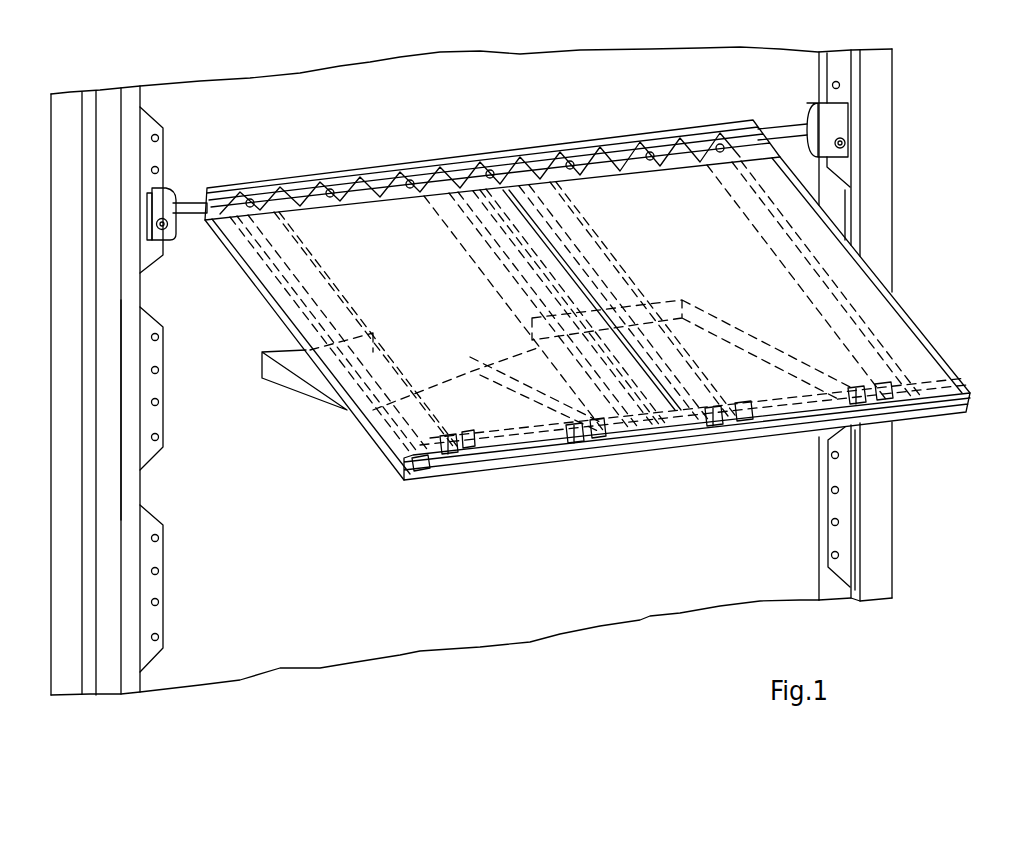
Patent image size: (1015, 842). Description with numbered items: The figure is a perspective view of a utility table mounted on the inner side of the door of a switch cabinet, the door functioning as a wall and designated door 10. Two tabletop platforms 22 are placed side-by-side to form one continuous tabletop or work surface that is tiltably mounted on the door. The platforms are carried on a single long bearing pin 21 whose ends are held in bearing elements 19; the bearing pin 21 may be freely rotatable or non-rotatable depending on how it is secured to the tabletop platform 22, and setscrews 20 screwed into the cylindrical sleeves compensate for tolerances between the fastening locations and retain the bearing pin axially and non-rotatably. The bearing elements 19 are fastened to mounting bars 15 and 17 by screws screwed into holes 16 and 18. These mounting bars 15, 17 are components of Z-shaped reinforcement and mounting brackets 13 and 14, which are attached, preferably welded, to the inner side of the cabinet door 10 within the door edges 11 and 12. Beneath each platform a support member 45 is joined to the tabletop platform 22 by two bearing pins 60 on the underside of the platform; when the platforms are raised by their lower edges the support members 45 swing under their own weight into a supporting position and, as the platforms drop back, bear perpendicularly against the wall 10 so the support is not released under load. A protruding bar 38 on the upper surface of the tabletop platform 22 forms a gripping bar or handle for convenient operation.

The door 10 is at (347, 648).
The door edge 11 is at (68, 538).
The door edge 12 is at (873, 492).
The Z-shaped reinforcement and mounting bracket 13 is at (112, 482).
The Z-shaped reinforcement and mounting bracket 14 is at (857, 453).
The mounting bar 15 is at (158, 417).
The hole 16 is at (159, 370).
The mounting bar 17 is at (830, 513).
The hole 18 is at (826, 456).
The bearing element 19 is at (165, 198).
The setscrew 20 is at (165, 231).
The single long bearing pin 21 is at (190, 214).
The tabletop platform 22 is at (387, 447).
The protruding bar 38 is at (412, 471).
The support member 45 is at (283, 392).
The bearing pin 60 is at (445, 455).